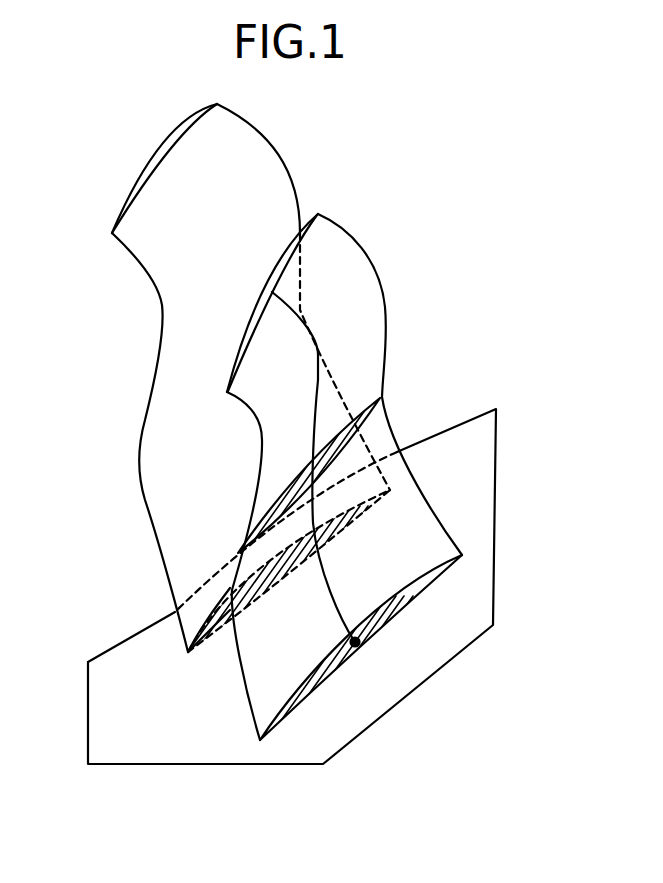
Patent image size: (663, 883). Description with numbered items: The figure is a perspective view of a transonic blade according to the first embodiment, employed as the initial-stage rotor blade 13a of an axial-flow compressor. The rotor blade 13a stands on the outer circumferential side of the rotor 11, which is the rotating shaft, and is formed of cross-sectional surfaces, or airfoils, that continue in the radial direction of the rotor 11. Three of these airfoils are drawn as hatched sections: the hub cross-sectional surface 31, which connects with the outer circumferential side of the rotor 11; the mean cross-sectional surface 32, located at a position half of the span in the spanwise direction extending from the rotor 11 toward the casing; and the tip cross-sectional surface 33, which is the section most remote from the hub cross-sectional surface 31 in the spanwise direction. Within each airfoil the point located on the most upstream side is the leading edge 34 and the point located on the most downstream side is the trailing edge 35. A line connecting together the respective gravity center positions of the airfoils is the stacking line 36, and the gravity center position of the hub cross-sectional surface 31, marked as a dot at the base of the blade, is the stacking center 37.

The rotor 11 is at (157, 683).
The initial-stage rotor blade 13a is at (337, 248).
The hub cross-sectional surface 31 is at (302, 700).
The mean cross-sectional surface 32 is at (380, 408).
The tip cross-sectional surface 33 is at (232, 360).
The leading edge 34 is at (230, 587).
The trailing edge 35 is at (353, 472).
The stacking line 36 is at (330, 582).
The stacking center 37 is at (363, 645).